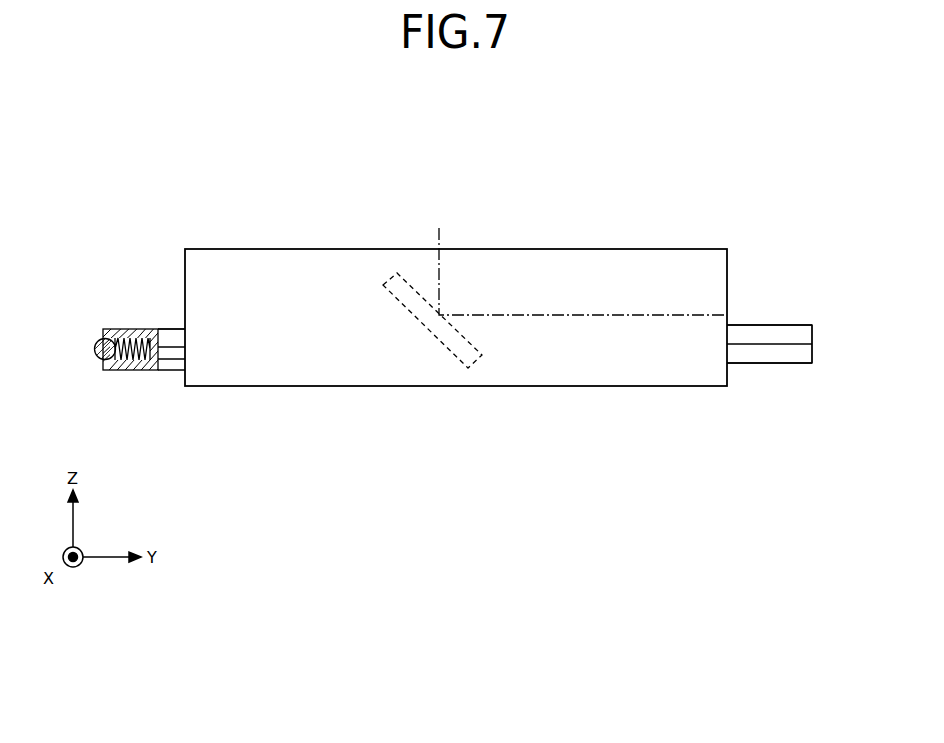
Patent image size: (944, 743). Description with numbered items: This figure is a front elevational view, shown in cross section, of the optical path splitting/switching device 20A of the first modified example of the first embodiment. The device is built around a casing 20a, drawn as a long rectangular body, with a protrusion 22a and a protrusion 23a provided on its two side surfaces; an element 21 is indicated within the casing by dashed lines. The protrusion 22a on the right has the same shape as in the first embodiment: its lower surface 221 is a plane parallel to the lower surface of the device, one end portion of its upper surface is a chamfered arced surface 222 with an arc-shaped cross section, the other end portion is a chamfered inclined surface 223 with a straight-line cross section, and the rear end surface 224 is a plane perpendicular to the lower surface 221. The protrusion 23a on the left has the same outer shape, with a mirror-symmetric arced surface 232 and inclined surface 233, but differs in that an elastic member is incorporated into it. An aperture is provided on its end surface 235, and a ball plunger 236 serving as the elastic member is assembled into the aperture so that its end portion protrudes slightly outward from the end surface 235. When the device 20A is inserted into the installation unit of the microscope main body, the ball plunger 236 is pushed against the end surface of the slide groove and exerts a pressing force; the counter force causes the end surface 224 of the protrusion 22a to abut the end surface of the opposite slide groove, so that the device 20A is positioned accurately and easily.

The optical path splitting/switching device 20A is at (478, 125).
The casing 20a is at (541, 249).
The mirror 21 is at (390, 278).
The protrusion 23a is at (163, 371).
The inclined surface 233 is at (167, 337).
The arced surface 232 is at (125, 330).
The end surface 235 is at (103, 331).
The ball plunger 236 is at (95, 348).
The protrusion 22a is at (797, 364).
The arced surface 222 is at (790, 325).
The inclined surface 223 is at (802, 333).
The end surface 224 is at (812, 356).
The lower surface 221 is at (740, 365).